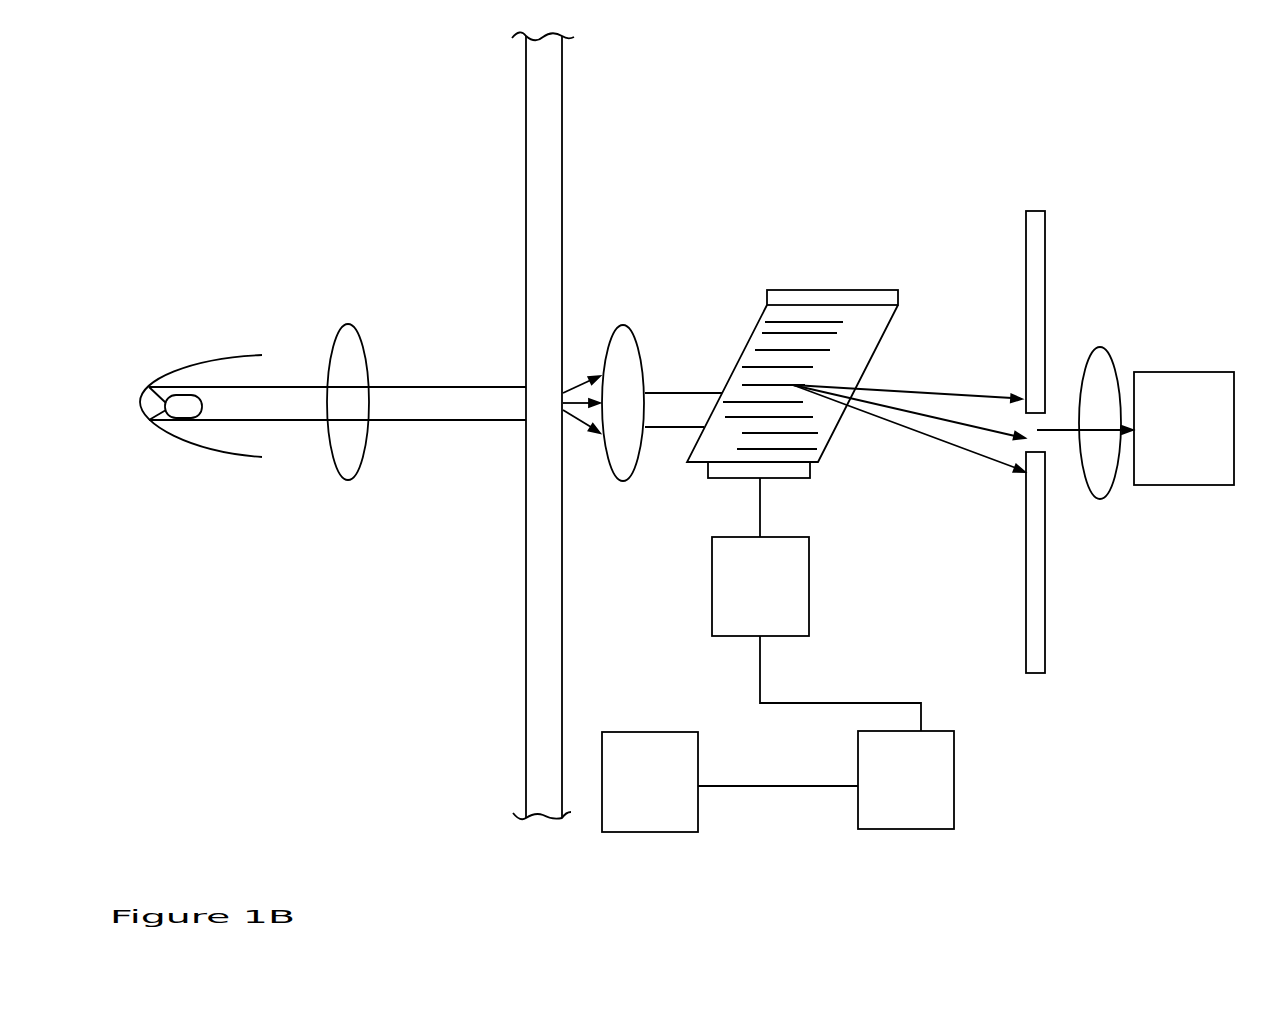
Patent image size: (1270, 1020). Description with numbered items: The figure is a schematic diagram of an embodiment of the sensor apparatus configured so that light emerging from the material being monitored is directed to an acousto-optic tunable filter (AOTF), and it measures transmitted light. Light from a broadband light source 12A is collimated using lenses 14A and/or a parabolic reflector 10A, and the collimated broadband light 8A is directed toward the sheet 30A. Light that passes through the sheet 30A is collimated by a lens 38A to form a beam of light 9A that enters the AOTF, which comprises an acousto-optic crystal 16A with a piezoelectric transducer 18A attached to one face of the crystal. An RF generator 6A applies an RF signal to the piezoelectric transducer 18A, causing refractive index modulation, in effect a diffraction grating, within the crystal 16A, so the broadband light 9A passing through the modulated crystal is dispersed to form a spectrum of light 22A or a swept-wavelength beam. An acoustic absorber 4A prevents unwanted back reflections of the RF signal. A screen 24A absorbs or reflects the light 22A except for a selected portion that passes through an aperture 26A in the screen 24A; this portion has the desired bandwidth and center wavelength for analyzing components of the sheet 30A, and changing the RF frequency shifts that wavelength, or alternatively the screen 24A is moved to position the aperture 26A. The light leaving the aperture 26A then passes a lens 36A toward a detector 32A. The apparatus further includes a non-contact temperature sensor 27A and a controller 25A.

The parabolic reflector 10A is at (225, 431).
The broadband light source 12A is at (229, 363).
The lenses 14A is at (380, 417).
The collimated broadband light 8A is at (337, 386).
The sheet 30A is at (581, 425).
The lens 38A is at (662, 390).
The beam of light 9A is at (688, 384).
The acoustic absorber 4A is at (862, 280).
The acousto-optic crystal 16A is at (801, 384).
The piezoelectric transducer 18A is at (789, 499).
The RF generator 6A is at (816, 634).
The controller 25A is at (826, 780).
The non-contact temperature sensor 27A is at (650, 782).
The spectrum of light 22A is at (909, 416).
The screen 24A is at (1073, 456).
The aperture 26A is at (1049, 417).
The focusing lens 36A is at (1137, 407).
The detector 32A is at (1202, 410).